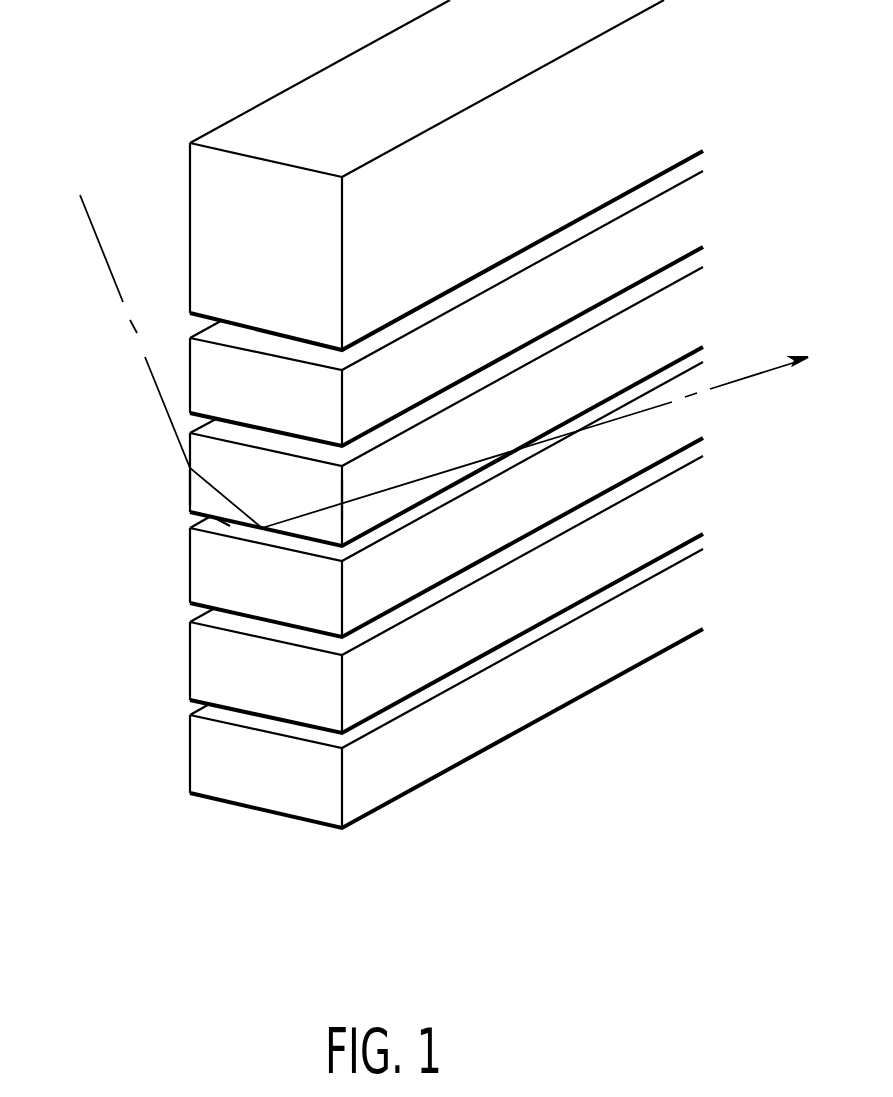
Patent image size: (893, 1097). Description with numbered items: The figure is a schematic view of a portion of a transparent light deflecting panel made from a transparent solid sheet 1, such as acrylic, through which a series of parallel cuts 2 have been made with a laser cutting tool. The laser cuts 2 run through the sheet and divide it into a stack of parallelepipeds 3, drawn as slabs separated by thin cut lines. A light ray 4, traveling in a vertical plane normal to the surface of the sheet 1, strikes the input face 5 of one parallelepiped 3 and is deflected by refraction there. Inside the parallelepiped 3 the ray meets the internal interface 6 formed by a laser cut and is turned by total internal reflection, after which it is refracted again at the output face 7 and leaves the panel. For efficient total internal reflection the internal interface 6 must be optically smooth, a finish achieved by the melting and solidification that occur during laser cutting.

The transparent solid sheet 1 is at (427, 175).
The parallel cuts 2 is at (465, 486).
The parallelepipeds 3 is at (446, 499).
The light ray 4 is at (155, 361).
The input face 5 is at (189, 488).
The internal interface 6 is at (223, 520).
The output face 7 is at (343, 494).